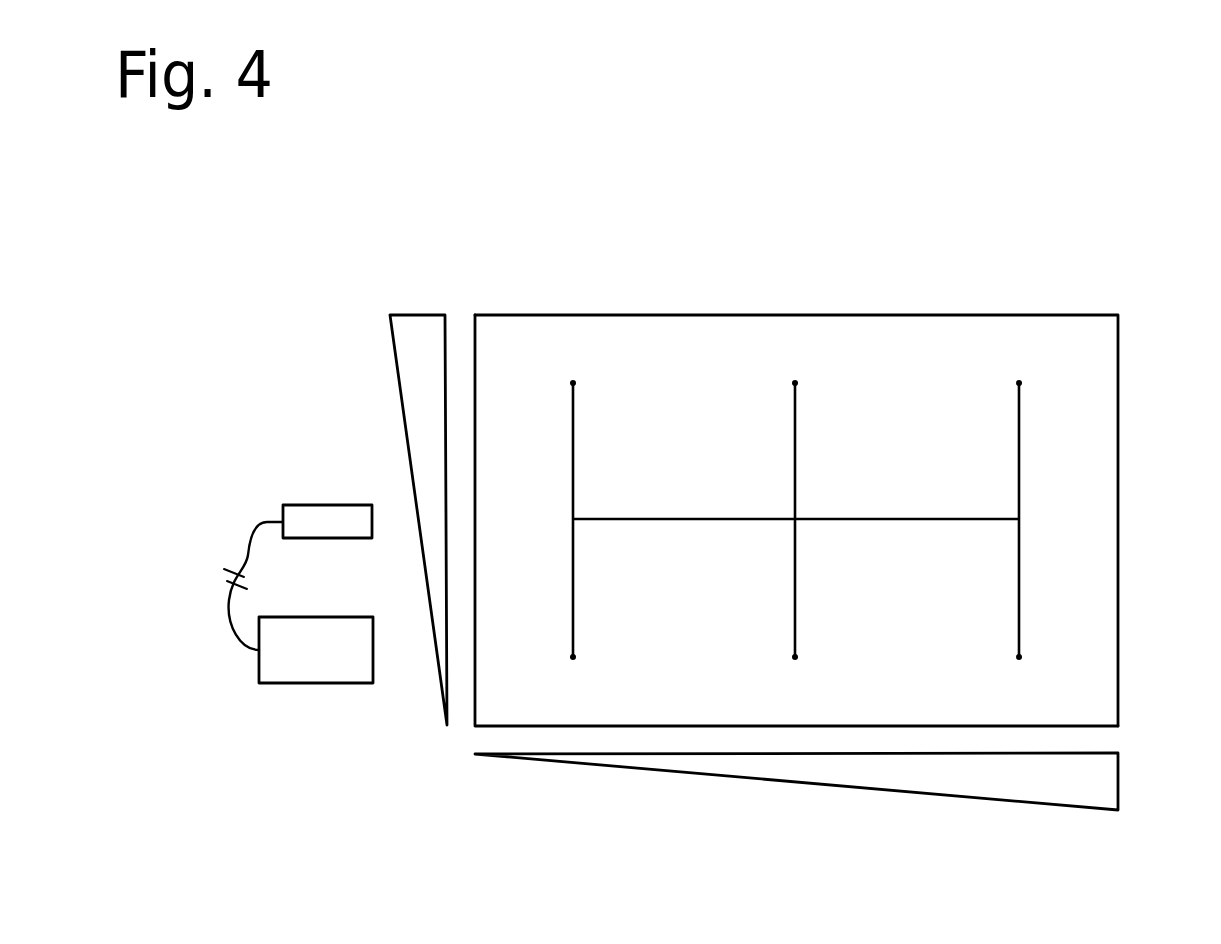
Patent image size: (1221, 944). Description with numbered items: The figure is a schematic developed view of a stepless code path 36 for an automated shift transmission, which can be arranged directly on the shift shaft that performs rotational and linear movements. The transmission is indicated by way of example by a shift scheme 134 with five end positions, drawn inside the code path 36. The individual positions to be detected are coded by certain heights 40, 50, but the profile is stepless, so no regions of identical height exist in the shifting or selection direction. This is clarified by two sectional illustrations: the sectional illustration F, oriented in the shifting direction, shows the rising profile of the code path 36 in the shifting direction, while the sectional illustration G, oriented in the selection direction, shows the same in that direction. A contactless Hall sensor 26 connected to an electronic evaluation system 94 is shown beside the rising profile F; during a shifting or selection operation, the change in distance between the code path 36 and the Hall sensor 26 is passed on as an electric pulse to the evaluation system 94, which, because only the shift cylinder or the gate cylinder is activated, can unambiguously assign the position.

The stepless code path 36 is at (809, 511).
The height 40 is at (525, 683).
The height 50 is at (1053, 395).
The shift scheme 134 is at (793, 403).
The sectional illustration F is at (415, 315).
The sectional illustration G is at (1119, 780).
The Hall sensor 26 is at (333, 505).
The electronic evaluation system 94 is at (313, 684).